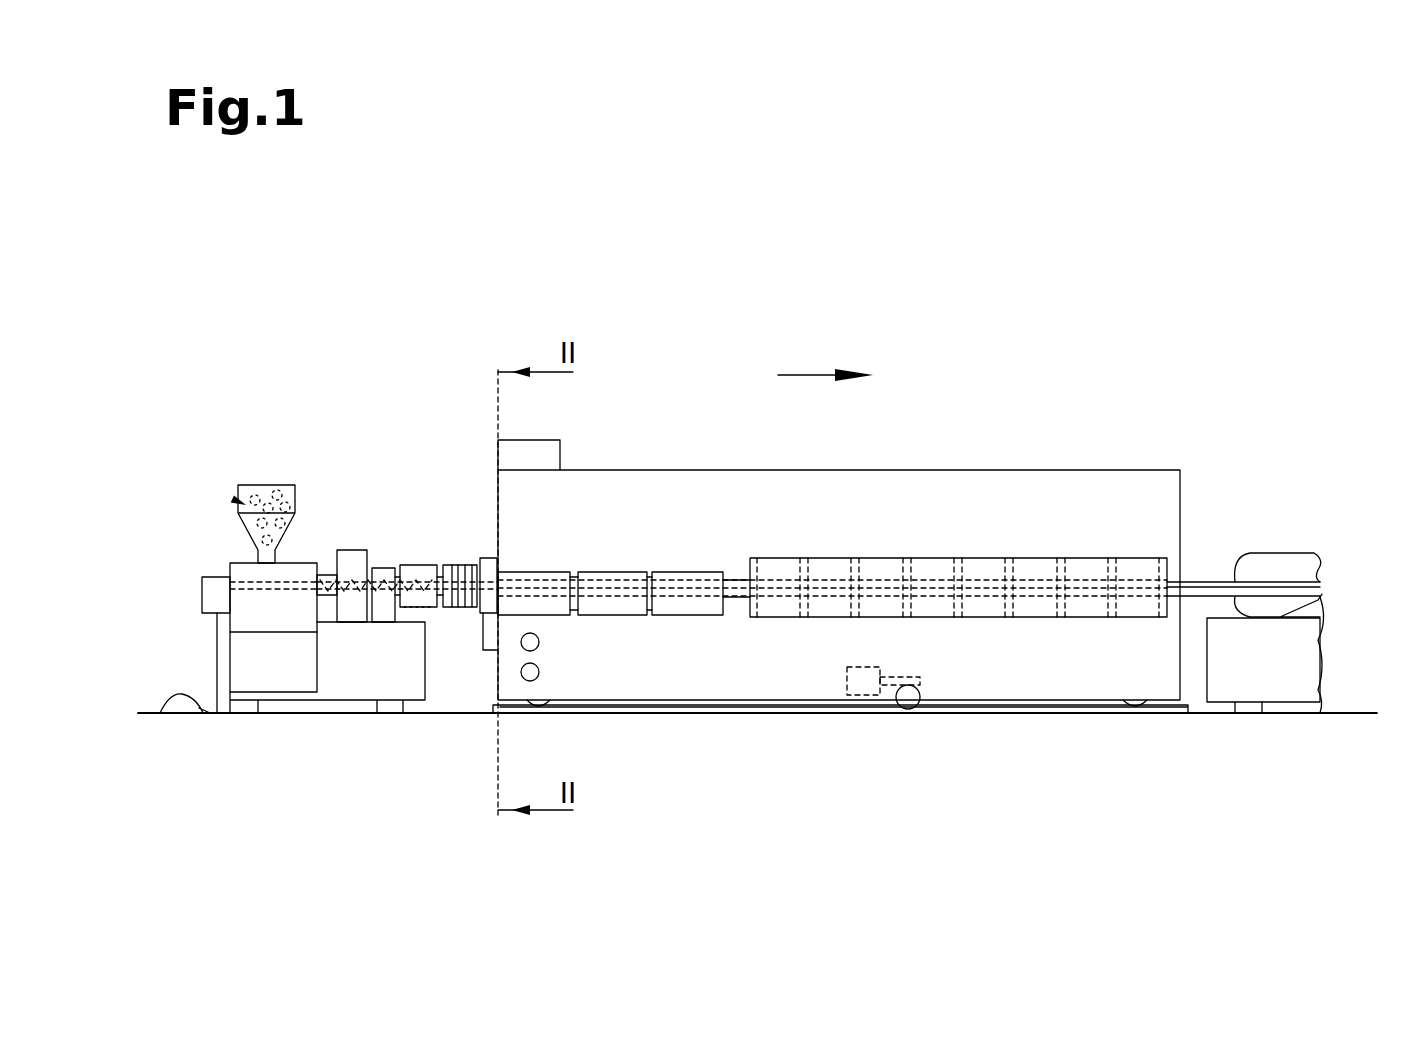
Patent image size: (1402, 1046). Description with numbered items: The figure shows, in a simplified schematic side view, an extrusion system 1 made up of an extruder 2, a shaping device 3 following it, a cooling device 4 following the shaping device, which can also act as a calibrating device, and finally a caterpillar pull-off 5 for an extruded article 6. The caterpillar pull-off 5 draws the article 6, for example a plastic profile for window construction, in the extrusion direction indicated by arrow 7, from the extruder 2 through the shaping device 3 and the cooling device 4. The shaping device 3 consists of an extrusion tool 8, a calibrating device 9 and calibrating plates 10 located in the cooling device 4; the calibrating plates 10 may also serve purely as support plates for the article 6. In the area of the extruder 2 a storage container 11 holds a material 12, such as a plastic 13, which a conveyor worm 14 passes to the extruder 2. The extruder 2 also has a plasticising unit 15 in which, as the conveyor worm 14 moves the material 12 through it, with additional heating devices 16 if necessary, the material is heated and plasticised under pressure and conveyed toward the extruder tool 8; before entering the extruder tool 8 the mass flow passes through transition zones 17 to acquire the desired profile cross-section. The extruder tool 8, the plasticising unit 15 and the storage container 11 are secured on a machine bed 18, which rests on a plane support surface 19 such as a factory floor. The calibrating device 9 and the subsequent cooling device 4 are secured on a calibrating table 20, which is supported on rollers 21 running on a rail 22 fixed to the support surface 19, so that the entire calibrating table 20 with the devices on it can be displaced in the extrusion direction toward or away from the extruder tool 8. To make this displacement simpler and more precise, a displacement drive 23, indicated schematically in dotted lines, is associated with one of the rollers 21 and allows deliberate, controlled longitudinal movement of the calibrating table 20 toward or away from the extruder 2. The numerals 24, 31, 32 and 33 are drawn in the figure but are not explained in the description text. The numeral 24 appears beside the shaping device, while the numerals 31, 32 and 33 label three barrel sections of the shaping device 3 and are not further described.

The extrusion system 1 is at (482, 236).
The extruder 2 is at (325, 463).
The shaping device 3 is at (580, 503).
The cooling device 4 is at (960, 535).
The caterpillar pull-off 5 is at (1285, 565).
The extruded article 6 is at (1205, 583).
The extrusion direction arrow 7 is at (812, 372).
The extrusion tool 8 is at (419, 563).
The calibrating device 9 is at (640, 628).
The calibrating plates 10 is at (850, 600).
The storage container 11 is at (247, 482).
The material 12 is at (238, 503).
The plastic 13 is at (278, 495).
The conveyor worm 14 is at (417, 610).
The plasticising unit 15 is at (383, 555).
The heating devices 16 is at (382, 550).
The transition zones 17 is at (465, 607).
The machine bed 18 is at (328, 697).
The support surface 19 is at (160, 713).
The calibrating table 20 is at (748, 675).
The rollers 21 is at (548, 705).
The rail 22 is at (972, 712).
The displacement drive 23 is at (868, 695).
The screw shaft seal 24 is at (490, 556).
The first barrel segment 31 is at (553, 575).
The second barrel segment 32 is at (612, 575).
The third barrel segment 33 is at (677, 575).